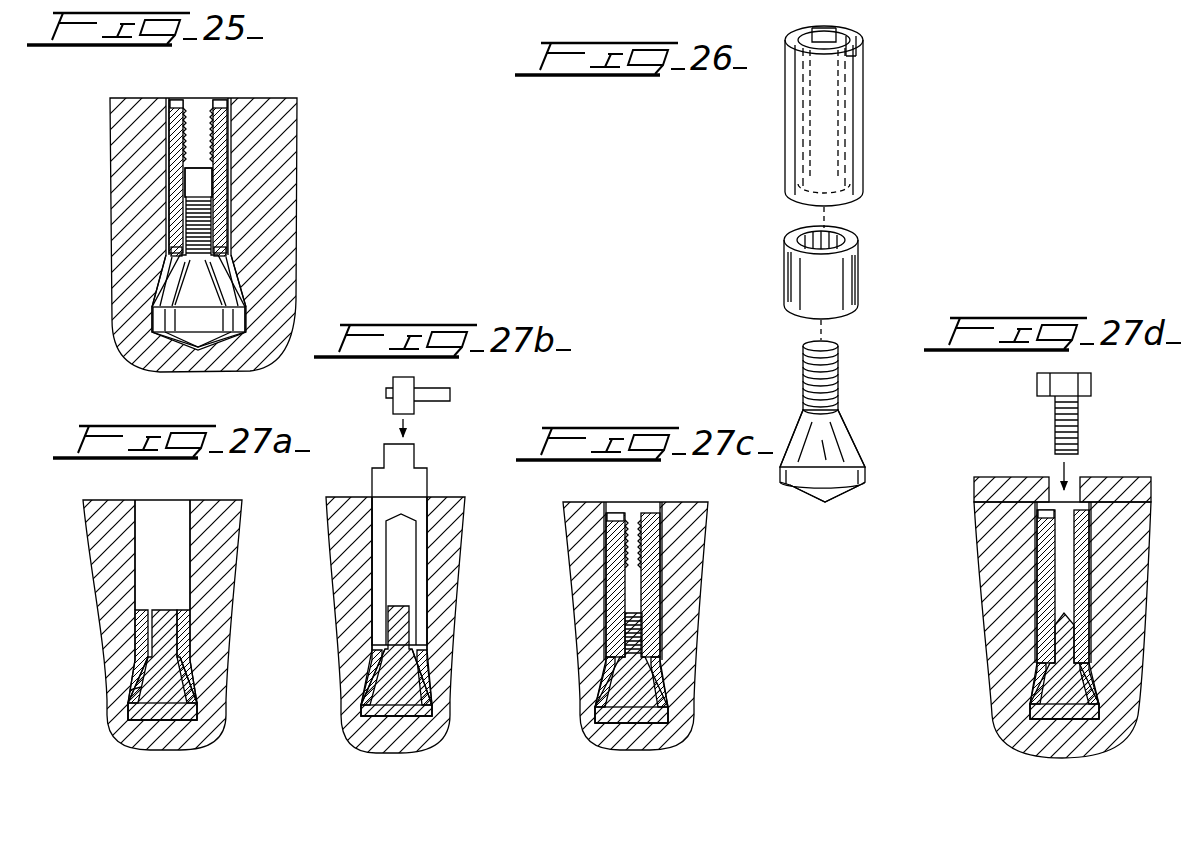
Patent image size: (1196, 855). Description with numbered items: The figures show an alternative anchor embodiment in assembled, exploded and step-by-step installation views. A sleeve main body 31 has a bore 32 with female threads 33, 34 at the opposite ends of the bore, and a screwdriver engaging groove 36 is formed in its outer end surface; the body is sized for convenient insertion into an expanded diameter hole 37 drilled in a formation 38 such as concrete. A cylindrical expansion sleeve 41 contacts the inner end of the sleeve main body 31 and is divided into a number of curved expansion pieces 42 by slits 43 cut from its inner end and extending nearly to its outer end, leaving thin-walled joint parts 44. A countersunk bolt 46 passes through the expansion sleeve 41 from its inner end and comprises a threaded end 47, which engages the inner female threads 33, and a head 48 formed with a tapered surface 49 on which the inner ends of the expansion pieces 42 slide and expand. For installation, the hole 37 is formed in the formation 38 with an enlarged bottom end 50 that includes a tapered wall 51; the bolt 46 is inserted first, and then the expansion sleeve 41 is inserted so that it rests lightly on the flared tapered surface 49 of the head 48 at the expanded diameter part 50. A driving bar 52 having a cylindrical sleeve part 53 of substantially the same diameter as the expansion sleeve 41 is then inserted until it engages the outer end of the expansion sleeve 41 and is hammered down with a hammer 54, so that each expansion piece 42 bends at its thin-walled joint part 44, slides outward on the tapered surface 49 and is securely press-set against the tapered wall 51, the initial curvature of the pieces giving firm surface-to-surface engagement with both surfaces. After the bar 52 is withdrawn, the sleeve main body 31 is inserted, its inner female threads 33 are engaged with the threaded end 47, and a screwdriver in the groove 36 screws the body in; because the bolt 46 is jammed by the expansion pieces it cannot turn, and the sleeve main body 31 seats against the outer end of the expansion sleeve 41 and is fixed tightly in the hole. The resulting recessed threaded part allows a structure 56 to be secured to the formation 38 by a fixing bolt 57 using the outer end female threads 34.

In FIG. 25, the sleeve main body 31 is at (228, 152).
In FIG. 26, the sleeve main body 31 is at (864, 120).
In FIG. 27C, the sleeve main body 31 is at (653, 522).
In FIG. 27D, the sleeve main body 31 is at (1084, 540).
In FIG. 25, the bore 32 is at (198, 180).
In FIG. 25, the female threads 33 is at (214, 223).
In FIG. 26, the female threads 33 is at (843, 165).
In FIG. 27C, the female threads 33 is at (646, 632).
In FIG. 25, the female threads 34 is at (212, 107).
In FIG. 26, the female threads 34 is at (833, 32).
In FIG. 27D, the female threads 34 is at (1036, 531).
In FIG. 25, the screwdriver engaging groove 36 is at (178, 104).
In FIG. 26, the screwdriver engaging groove 36 is at (848, 53).
In FIG. 27C, the screwdriver engaging groove 36 is at (614, 516).
In FIG. 25, the hole 37 is at (234, 100).
In FIG. 27A, the hole 37 is at (183, 520).
In FIG. 27B, the hole 37 is at (417, 517).
In FIG. 27C, the hole 37 is at (664, 573).
In FIG. 27D, the hole 37 is at (1090, 573).
In FIG. 25, the formation 38 is at (138, 96).
In FIG. 27A, the formation 38 is at (105, 503).
In FIG. 25, the expansion sleeve 41 is at (165, 250).
In FIG. 26, the expansion sleeve 41 is at (863, 226).
In FIG. 27A, the expansion sleeve 41 is at (189, 629).
In FIG. 27B, the expansion sleeve 41 is at (437, 686).
In FIG. 27C, the expansion sleeve 41 is at (666, 677).
In FIG. 27D, the expansion sleeve 41 is at (1091, 668).
In FIG. 25, the expansion pieces 42 is at (233, 266).
In FIG. 26, the expansion pieces 42 is at (823, 296).
In FIG. 25, the slits 43 is at (234, 290).
In FIG. 26, the slits 43 is at (790, 301).
In FIG. 26, the thin-walled joint parts 44 is at (858, 260).
In FIG. 25, the countersunk bolt 46 is at (204, 201).
In FIG. 26, the countersunk bolt 46 is at (845, 392).
In FIG. 27A, the countersunk bolt 46 is at (128, 702).
In FIG. 27B, the countersunk bolt 46 is at (385, 713).
In FIG. 27C, the countersunk bolt 46 is at (622, 716).
In FIG. 27D, the countersunk bolt 46 is at (1054, 718).
In FIG. 25, the threaded end 47 is at (196, 213).
In FIG. 26, the threaded end 47 is at (803, 380).
In FIG. 27C, the threaded end 47 is at (644, 620).
In FIG. 25, the head 48 is at (183, 326).
In FIG. 26, the head 48 is at (858, 478).
In FIG. 25, the tapered surface 49 is at (193, 290).
In FIG. 26, the tapered surface 49 is at (841, 432).
In FIG. 27A, the tapered surface 49 is at (188, 683).
In FIG. 27B, the tapered surface 49 is at (388, 676).
In FIG. 25, the enlarged bottom end 50 is at (233, 328).
In FIG. 27A, the enlarged bottom end 50 is at (198, 698).
In FIG. 27B, the enlarged bottom end 50 is at (429, 702).
In FIG. 27C, the enlarged bottom end 50 is at (659, 710).
In FIG. 27D, the enlarged bottom end 50 is at (1098, 716).
In FIG. 27A, the tapered wall 51 is at (137, 676).
In FIG. 27B, the driving bar 52 is at (403, 485).
In FIG. 27B, the cylindrical sleeve part 53 is at (378, 557).
In FIG. 27B, the hammer 54 is at (392, 408).
In FIG. 27D, the structure 56 is at (1108, 491).
In FIG. 27D, the fixing bolt 57 is at (1083, 383).